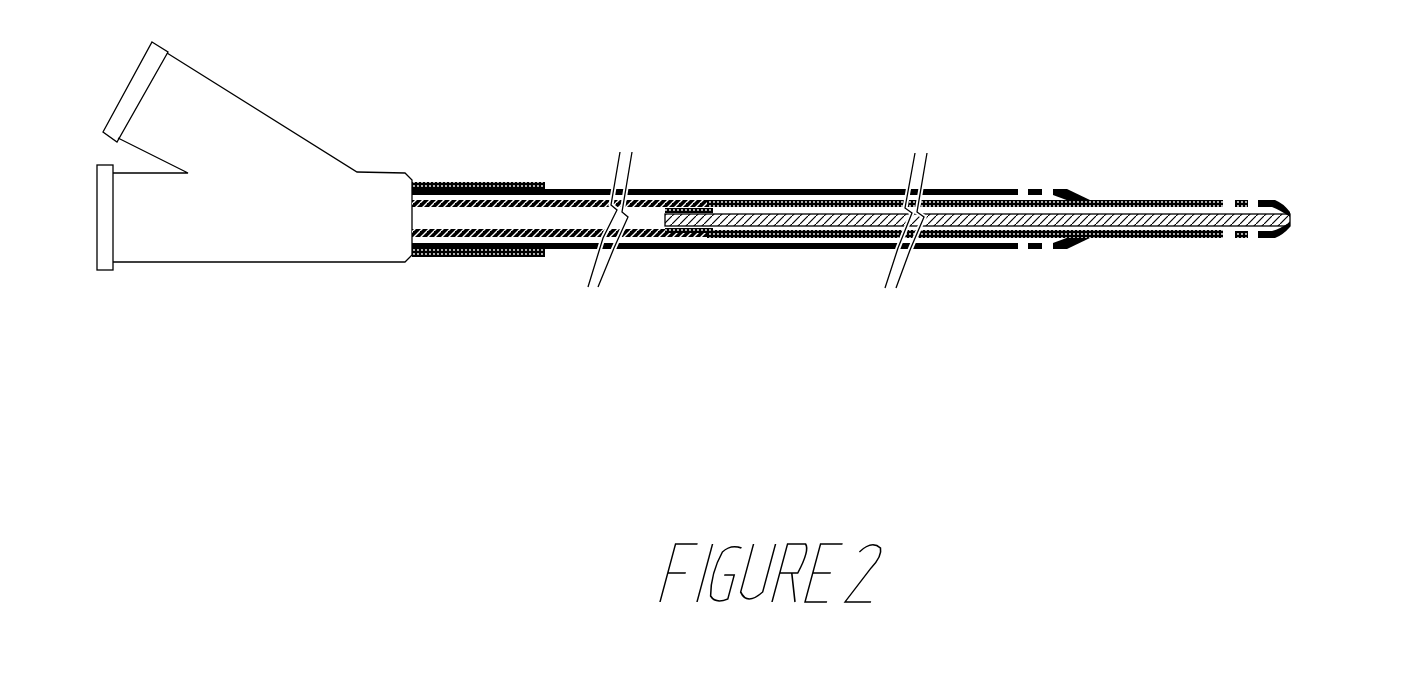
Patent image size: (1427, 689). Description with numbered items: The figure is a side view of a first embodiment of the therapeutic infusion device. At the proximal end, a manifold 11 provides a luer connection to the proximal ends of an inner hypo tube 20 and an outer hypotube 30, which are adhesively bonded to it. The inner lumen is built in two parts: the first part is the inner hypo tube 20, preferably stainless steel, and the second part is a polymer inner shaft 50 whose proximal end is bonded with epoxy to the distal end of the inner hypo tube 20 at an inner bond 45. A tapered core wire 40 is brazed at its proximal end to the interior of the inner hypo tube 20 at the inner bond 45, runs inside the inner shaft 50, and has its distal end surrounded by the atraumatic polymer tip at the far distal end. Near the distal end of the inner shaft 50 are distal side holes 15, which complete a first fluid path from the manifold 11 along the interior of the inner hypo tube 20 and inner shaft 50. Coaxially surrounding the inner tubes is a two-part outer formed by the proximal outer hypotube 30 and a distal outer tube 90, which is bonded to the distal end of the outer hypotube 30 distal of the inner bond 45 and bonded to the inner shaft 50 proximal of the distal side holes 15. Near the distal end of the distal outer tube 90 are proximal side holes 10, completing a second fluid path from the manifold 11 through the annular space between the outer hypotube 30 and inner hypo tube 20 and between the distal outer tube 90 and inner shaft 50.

The manifold 11 is at (355, 167).
The inner hypo tube 20 is at (481, 200).
The outer hypotube 30 is at (563, 190).
The inner bond 45 is at (700, 203).
The core wire 40 is at (779, 213).
The distal outer tube 90 is at (850, 190).
The proximal side holes 10 is at (1025, 190).
The inner shaft 50 is at (1142, 200).
The distal side holes 15 is at (939, 322).